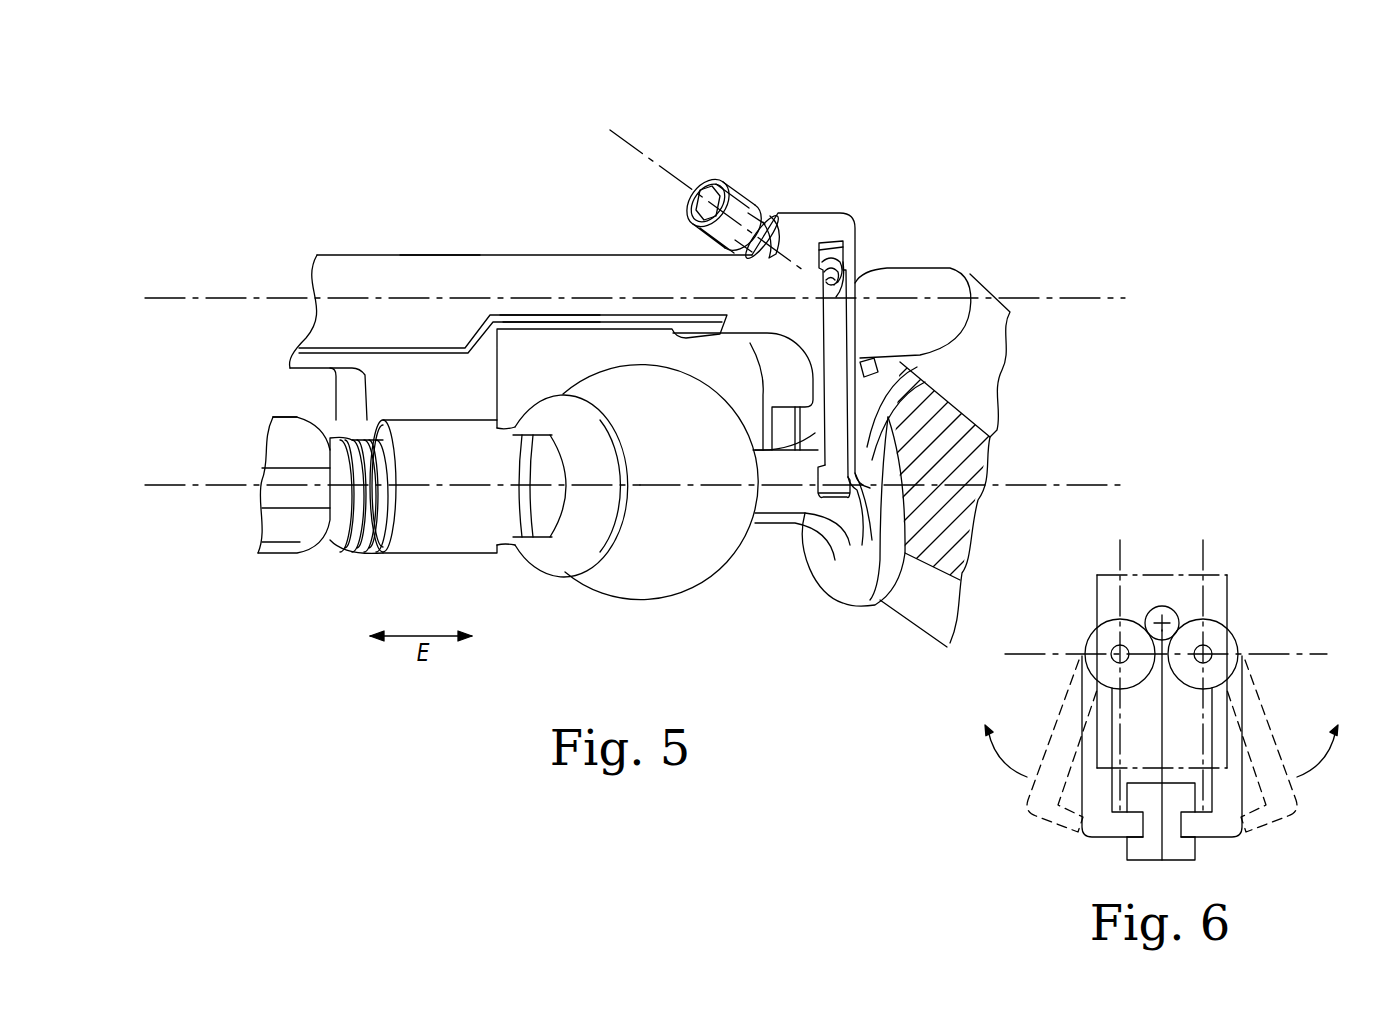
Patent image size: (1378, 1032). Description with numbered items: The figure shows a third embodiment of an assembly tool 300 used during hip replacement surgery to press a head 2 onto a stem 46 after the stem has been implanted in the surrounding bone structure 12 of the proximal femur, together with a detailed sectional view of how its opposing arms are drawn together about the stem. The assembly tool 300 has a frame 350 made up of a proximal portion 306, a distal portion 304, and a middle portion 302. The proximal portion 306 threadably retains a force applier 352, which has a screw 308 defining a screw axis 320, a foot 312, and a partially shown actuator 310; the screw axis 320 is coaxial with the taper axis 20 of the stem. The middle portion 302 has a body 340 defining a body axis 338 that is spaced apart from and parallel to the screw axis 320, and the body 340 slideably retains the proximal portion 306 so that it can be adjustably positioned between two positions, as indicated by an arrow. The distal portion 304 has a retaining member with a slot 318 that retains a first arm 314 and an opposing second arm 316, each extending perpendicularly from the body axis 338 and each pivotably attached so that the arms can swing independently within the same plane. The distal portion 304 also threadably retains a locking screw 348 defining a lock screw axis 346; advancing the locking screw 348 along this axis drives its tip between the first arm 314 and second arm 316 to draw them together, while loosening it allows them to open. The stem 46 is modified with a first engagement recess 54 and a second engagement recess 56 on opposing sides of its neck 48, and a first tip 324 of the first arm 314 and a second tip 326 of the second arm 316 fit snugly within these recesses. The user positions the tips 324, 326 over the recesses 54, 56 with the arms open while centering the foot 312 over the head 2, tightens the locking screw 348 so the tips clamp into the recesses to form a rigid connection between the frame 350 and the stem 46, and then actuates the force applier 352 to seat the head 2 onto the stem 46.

In FIG. 5, the head 2 is at (680, 588).
In FIG. 5, the vehicle structure 12 is at (930, 630).
In FIG. 5, the taper axis 20 is at (222, 484).
In FIG. 5, the stem 46 is at (850, 605).
In FIG. 5, the neck 48 is at (775, 520).
In FIG. 6, the neck 48 is at (1162, 862).
In FIG. 6, the first engagement recess 54 is at (1127, 838).
In FIG. 5, the second engagement recess 56 is at (830, 528).
In FIG. 6, the second engagement recess 56 is at (1195, 838).
In FIG. 5, the assembly tool 300 is at (960, 188).
In FIG. 5, the middle portion 302 is at (370, 254).
In FIG. 5, the distal portion 304 is at (800, 212).
In FIG. 6, the distal portion 304 is at (1228, 586).
In FIG. 5, the proximal portion 306 is at (437, 555).
In FIG. 5, the screw 308 is at (342, 552).
In FIG. 5, the actuator 310 is at (262, 555).
In FIG. 5, the foot 312 is at (555, 572).
In FIG. 5, the first arm 314 is at (762, 400).
In FIG. 6, the first arm 314 is at (1092, 630).
In FIG. 5, the second arm 316 is at (846, 340).
In FIG. 6, the second arm 316 is at (1232, 630).
In FIG. 5, the slot 318 is at (842, 236).
In FIG. 5, the screw axis 320 is at (1095, 484).
In FIG. 6, the first tip 324 is at (1102, 830).
In FIG. 5, the second tip 326 is at (820, 492).
In FIG. 6, the second tip 326 is at (1226, 830).
In FIG. 5, the body axis 338 is at (222, 296).
In FIG. 5, the body 340 is at (512, 254).
In FIG. 5, the lock screw axis 346 is at (625, 150).
In FIG. 5, the locking screw 348 is at (705, 178).
In FIG. 6, the locking screw 348 is at (1162, 605).
In FIG. 5, the frame 350 is at (442, 254).
In FIG. 5, the force applier 352 is at (275, 423).